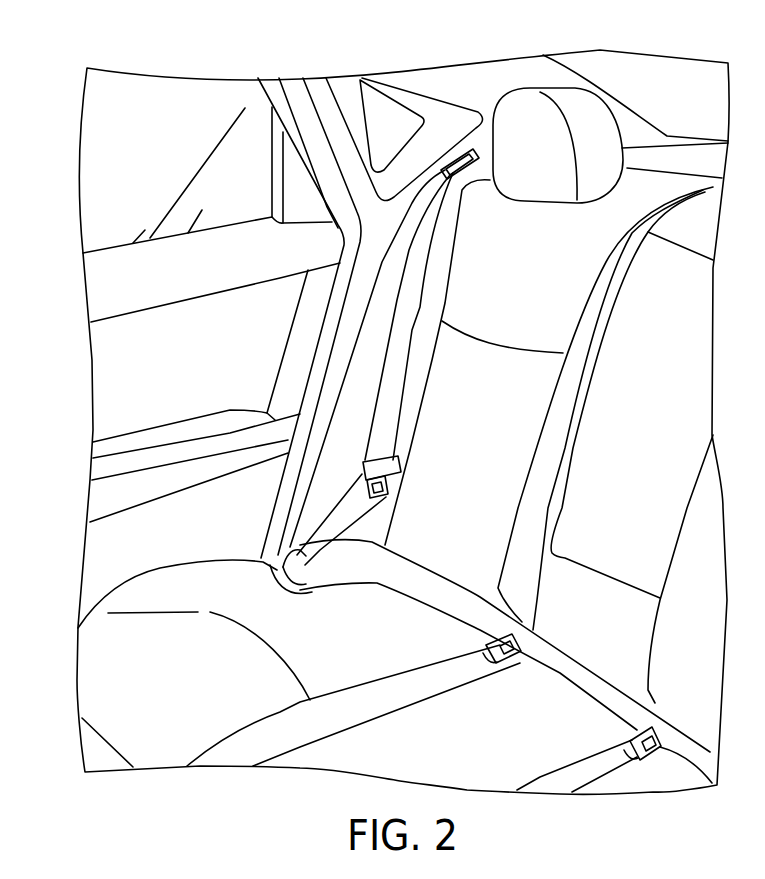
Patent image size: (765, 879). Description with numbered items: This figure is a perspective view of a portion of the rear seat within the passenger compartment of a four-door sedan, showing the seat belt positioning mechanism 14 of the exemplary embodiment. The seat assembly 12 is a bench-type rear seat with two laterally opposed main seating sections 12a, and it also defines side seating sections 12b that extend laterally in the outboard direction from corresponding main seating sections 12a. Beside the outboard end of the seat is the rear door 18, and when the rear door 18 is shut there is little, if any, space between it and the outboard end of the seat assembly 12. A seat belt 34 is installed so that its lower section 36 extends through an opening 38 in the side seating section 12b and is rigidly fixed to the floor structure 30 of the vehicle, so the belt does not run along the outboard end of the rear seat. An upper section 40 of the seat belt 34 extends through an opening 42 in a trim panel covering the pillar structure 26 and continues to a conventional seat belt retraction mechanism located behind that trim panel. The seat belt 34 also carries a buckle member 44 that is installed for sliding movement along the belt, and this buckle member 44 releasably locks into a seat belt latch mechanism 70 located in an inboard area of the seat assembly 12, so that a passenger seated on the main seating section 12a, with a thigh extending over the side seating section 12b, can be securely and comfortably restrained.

The seat assembly 12 is at (162, 562).
The main seating section 12a is at (420, 633).
The side seating section 12b is at (205, 580).
The seat belt positioning mechanism 14 is at (262, 565).
The rear door 18 is at (170, 272).
The pillar structure 26 is at (474, 88).
The floor structure 30 is at (100, 755).
The seat belt 34 is at (393, 390).
The lower section 36 is at (298, 552).
The opening 38 is at (290, 587).
The upper section 40 is at (423, 232).
The opening 42 is at (440, 177).
The buckle member 44 is at (387, 483).
The seat belt latch mechanism 70 is at (515, 657).